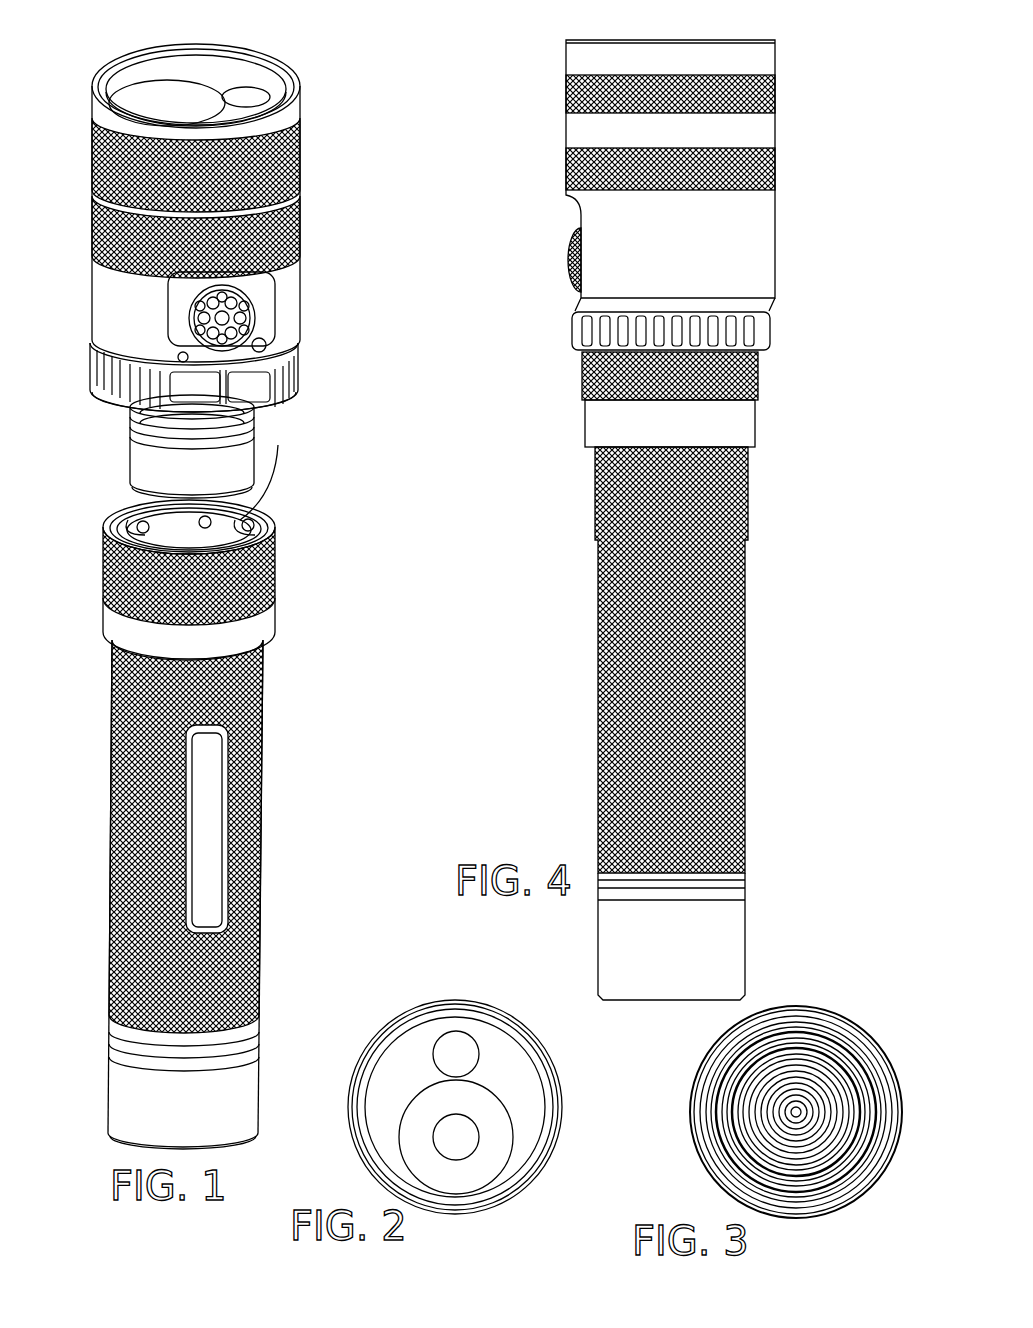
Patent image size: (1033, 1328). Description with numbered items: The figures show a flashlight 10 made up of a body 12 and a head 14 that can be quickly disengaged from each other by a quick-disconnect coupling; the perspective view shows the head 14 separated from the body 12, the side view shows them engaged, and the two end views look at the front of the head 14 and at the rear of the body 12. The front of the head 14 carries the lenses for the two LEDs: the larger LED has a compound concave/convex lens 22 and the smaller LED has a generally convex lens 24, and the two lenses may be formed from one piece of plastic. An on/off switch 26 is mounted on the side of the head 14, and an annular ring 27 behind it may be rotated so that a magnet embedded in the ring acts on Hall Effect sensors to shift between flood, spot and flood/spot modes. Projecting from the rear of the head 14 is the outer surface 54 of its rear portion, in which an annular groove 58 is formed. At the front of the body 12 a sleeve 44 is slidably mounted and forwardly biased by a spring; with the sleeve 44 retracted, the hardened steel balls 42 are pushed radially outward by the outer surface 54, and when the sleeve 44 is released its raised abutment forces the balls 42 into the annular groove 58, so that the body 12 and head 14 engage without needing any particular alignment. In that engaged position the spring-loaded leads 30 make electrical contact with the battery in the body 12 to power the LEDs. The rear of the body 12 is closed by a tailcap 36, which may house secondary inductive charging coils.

In FIG. 1, the flashlight 10 is at (198, 579).
In FIG. 4, the flashlight 10 is at (648, 520).
In FIG. 2, the flashlight 10 is at (446, 1083).
In FIG. 3, the flashlight 10 is at (763, 1091).
In FIG. 1, the body 12 is at (195, 894).
In FIG. 4, the body 12 is at (674, 723).
In FIG. 1, the head 14 is at (232, 210).
In FIG. 4, the head 14 is at (671, 204).
In FIG. 2, the head 14 is at (473, 1083).
In FIG. 3, the head 14 is at (778, 1091).
In FIG. 1, the compound concave/convex lens 22 is at (190, 103).
In FIG. 2, the compound concave/convex lens 22 is at (462, 1140).
In FIG. 1, the generally convex lens 24 is at (250, 98).
In FIG. 2, the generally convex lens 24 is at (455, 1053).
In FIG. 1, the on/off switch 26 is at (242, 320).
In FIG. 4, the on/off switch 26 is at (570, 262).
In FIG. 1, the annular ring 27 is at (287, 370).
In FIG. 4, the annular ring 27 is at (772, 330).
In FIG. 1, the spring-loaded leads 30 is at (278, 446).
In FIG. 1, the tailcap 36 is at (104, 1080).
In FIG. 4, the tailcap 36 is at (594, 941).
In FIG. 3, the tailcap 36 is at (812, 1055).
In FIG. 1, the steel balls 42 is at (147, 524).
In FIG. 1, the sleeve 44 is at (183, 570).
In FIG. 4, the sleeve 44 is at (587, 415).
In FIG. 1, the outer surface 54 is at (151, 446).
In FIG. 1, the annular groove 58 is at (155, 417).